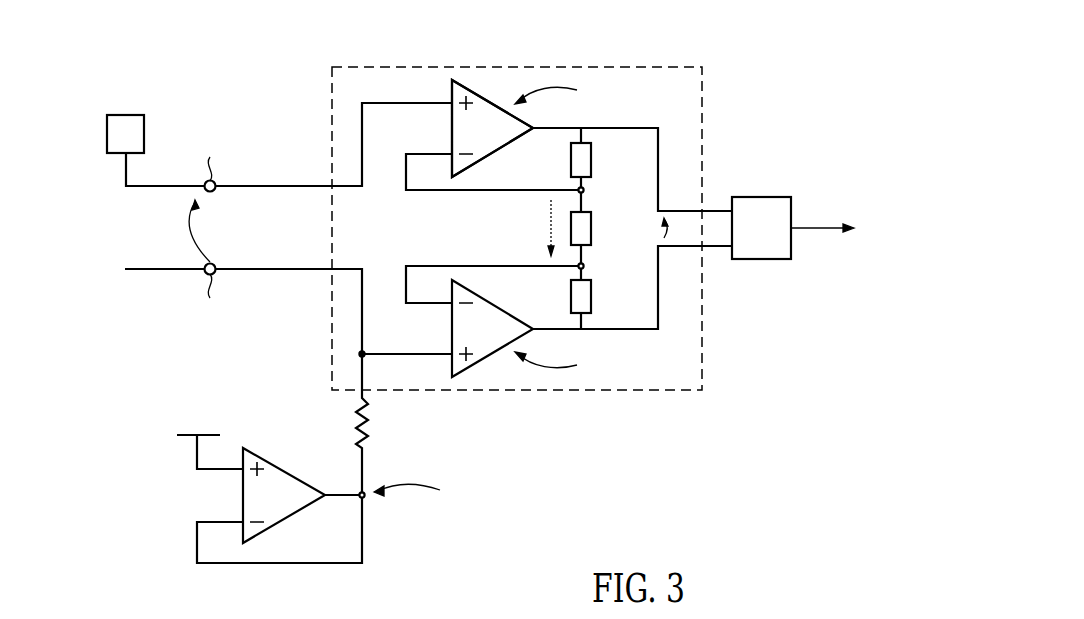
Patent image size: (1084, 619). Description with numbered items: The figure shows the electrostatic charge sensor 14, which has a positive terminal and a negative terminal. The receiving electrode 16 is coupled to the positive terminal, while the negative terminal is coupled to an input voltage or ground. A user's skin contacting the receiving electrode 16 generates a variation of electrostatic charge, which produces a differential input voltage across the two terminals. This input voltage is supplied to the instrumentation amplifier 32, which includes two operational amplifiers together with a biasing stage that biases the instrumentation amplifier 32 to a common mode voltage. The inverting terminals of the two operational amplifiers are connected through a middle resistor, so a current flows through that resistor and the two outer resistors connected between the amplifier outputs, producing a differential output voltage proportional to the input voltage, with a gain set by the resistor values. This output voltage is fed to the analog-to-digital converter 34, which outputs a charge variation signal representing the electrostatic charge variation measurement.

The electrostatic charge sensor 14 is at (240, 72).
The receiving electrode 16 is at (128, 113).
The instrumentation amplifier 32 is at (398, 66).
The analog-to-digital converter 34 is at (762, 197).